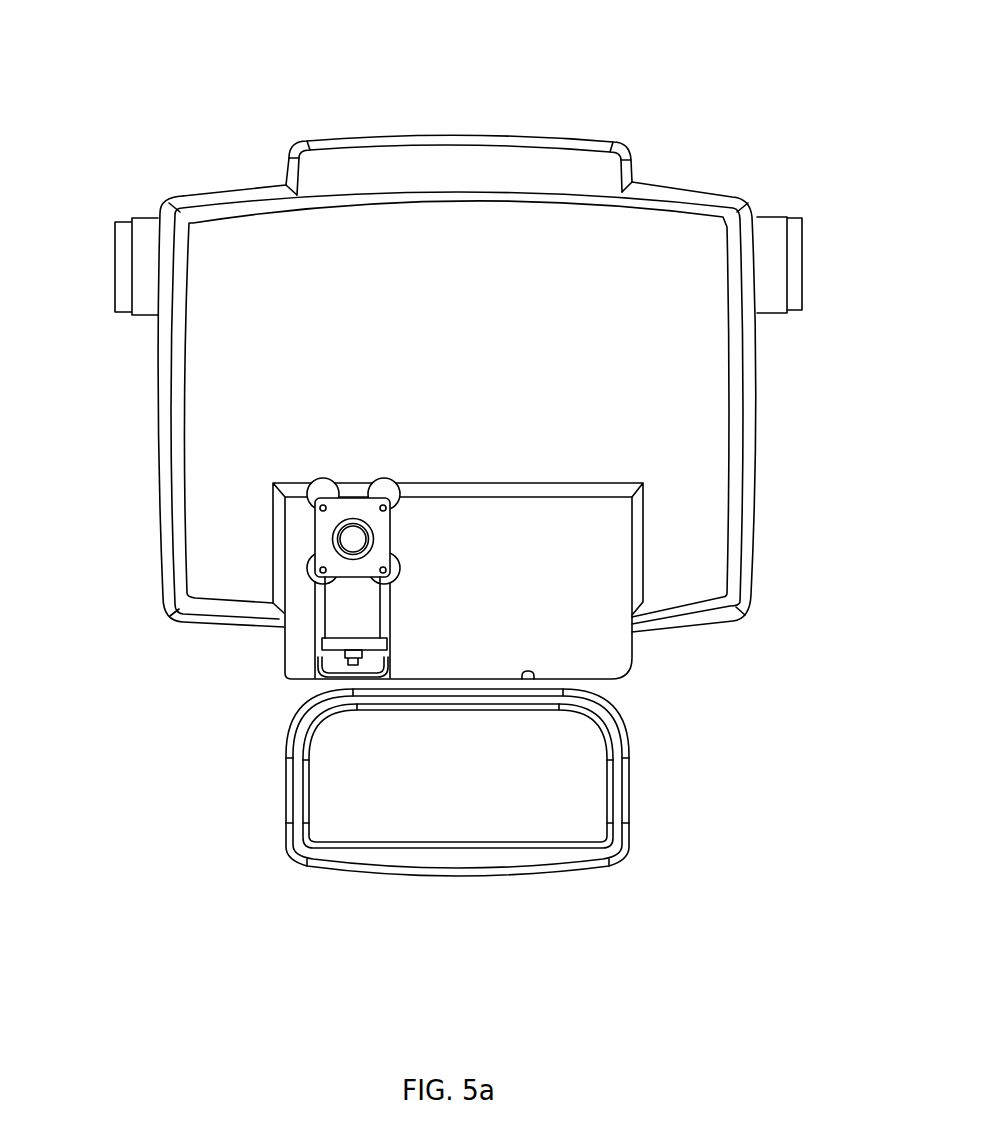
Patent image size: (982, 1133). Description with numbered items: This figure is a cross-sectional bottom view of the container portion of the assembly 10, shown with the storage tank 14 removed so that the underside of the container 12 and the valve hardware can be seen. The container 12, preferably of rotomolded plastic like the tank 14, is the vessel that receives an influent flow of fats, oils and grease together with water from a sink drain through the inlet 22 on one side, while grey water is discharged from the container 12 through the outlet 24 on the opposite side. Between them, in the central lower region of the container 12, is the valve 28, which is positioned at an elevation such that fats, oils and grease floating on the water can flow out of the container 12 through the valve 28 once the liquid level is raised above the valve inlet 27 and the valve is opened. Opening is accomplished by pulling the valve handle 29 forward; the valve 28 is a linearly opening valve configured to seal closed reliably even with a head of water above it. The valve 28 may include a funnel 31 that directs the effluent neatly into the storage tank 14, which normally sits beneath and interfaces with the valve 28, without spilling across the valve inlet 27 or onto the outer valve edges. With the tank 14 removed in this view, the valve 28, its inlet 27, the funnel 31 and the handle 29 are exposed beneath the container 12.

The assembly 10 is at (228, 94).
The container 12 is at (483, 346).
The storage tank 14 is at (483, 802).
The inlet 22 is at (802, 257).
The outlet 24 is at (114, 249).
The valve inlet 27 is at (335, 550).
The valve 28 is at (337, 565).
The valve handle 29 is at (340, 681).
The funnel 31 is at (347, 544).